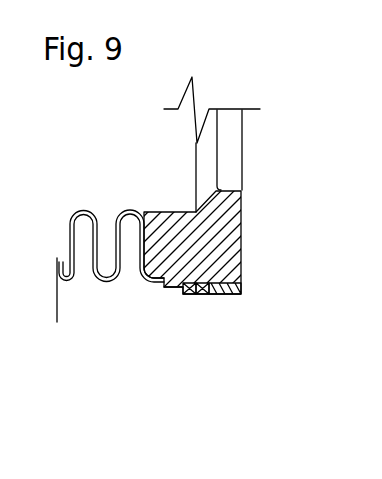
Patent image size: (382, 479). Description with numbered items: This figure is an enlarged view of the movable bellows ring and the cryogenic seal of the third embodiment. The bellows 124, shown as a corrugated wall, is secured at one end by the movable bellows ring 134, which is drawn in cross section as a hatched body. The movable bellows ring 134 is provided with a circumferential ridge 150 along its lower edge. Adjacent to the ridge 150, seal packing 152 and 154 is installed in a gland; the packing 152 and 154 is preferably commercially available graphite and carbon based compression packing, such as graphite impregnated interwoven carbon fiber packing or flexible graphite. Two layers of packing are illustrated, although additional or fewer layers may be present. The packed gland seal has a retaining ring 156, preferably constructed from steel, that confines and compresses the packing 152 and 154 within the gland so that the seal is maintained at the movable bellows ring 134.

The bellows 124 is at (103, 284).
The movable bellows ring 134 is at (241, 232).
The circumferential ridge 150 is at (175, 289).
The seal packing 152 is at (188, 295).
The seal packing 154 is at (201, 295).
The retaining ring 156 is at (238, 296).